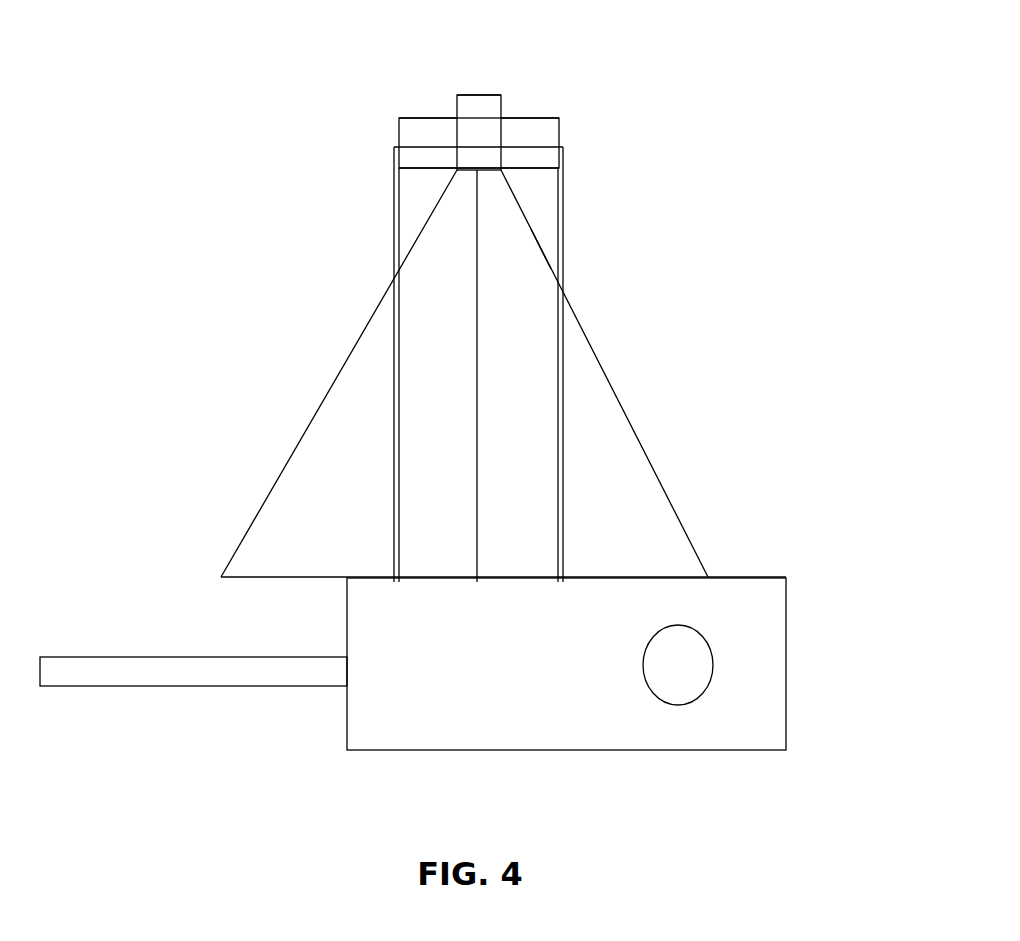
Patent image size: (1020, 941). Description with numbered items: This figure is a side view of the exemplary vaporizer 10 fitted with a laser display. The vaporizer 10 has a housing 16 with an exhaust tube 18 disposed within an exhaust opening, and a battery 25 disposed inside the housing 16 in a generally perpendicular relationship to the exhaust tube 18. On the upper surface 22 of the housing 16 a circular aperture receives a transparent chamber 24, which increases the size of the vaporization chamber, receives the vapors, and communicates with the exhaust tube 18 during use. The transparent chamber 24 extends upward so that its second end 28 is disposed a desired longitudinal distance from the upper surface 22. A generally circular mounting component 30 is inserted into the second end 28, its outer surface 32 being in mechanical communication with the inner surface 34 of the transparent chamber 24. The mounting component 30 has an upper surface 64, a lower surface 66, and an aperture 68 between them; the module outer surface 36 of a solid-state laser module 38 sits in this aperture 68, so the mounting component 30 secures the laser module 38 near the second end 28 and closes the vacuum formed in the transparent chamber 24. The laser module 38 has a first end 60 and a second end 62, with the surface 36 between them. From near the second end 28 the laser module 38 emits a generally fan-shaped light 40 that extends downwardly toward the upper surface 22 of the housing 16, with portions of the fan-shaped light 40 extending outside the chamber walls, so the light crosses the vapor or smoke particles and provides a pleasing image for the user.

The vaporizer 10 is at (718, 580).
The housing 16 is at (777, 605).
The exhaust tube 18 is at (187, 669).
The upper surface 22 is at (768, 577).
The transparent chamber 24 is at (548, 218).
The battery 25 is at (698, 670).
The second end 28 is at (400, 152).
The mounting component 30 is at (535, 120).
The outer surface 32 is at (548, 137).
The inner surface 34 is at (560, 232).
The module outer surface 36 is at (468, 130).
The laser module 38 is at (493, 102).
The fan-shaped light 40 is at (310, 420).
The first end 60 is at (492, 102).
The second end 62 is at (463, 177).
The upper surface 64 is at (548, 120).
The lower surface 66 is at (550, 170).
The aperture 68 is at (456, 165).